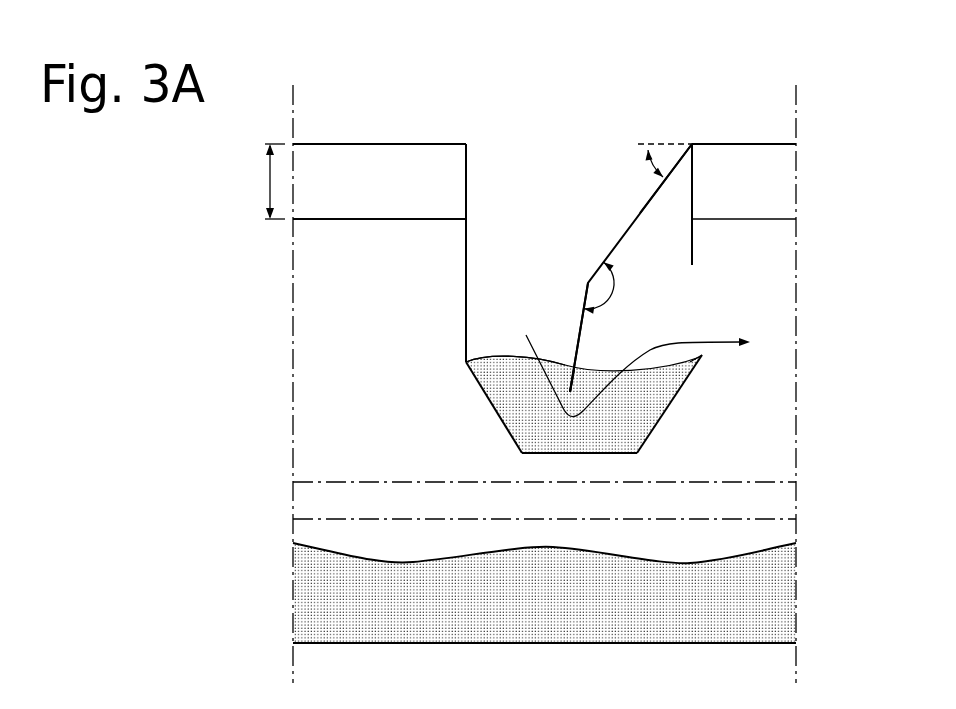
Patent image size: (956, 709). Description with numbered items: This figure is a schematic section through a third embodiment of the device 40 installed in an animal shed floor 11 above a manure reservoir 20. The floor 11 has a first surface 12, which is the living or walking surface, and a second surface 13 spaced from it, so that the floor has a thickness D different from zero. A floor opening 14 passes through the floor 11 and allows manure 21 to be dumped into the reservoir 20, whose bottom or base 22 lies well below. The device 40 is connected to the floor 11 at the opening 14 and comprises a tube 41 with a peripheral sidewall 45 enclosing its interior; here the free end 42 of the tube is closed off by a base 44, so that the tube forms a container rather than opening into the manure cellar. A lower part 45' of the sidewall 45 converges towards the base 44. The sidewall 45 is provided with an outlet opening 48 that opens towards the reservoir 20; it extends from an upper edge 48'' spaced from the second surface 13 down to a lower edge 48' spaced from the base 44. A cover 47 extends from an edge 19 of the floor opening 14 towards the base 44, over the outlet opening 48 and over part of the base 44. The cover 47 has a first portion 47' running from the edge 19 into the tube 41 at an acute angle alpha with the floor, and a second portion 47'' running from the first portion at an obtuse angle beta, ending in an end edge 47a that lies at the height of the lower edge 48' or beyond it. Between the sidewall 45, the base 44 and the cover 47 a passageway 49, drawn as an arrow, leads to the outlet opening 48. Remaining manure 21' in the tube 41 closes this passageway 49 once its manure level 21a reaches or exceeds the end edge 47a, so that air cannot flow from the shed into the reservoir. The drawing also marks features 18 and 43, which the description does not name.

The animal shed floor 11 is at (360, 167).
The first surface 12 is at (432, 144).
The second surface 13 is at (397, 219).
The thickness D is at (266, 181).
The floor opening 14 is at (532, 170).
The edge 18 is at (466, 178).
The edge of the floor opening 19 is at (692, 144).
The upper edge of side wall 43 is at (466, 213).
The device 40 is at (445, 278).
The tube 41 is at (466, 266).
The peripheral sidewall 45 is at (588, 253).
The upper edge 48'' is at (732, 267).
The outlet opening 48 is at (721, 310).
The lower edge 48' is at (725, 369).
The lower part of the sidewall 45' is at (688, 404).
The free end 42 is at (628, 455).
The base 44 is at (585, 453).
The remaining manure 21' is at (583, 404).
The manure level 21a is at (507, 356).
The passageway 49 is at (640, 357).
The cover 47 is at (611, 268).
The first portion 47' is at (636, 178).
The second portion 47'' is at (566, 321).
The end edge 47a is at (568, 386).
The reservoir 20 is at (379, 334).
The manure 21 is at (544, 593).
The base of the reservoir 22 is at (597, 643).